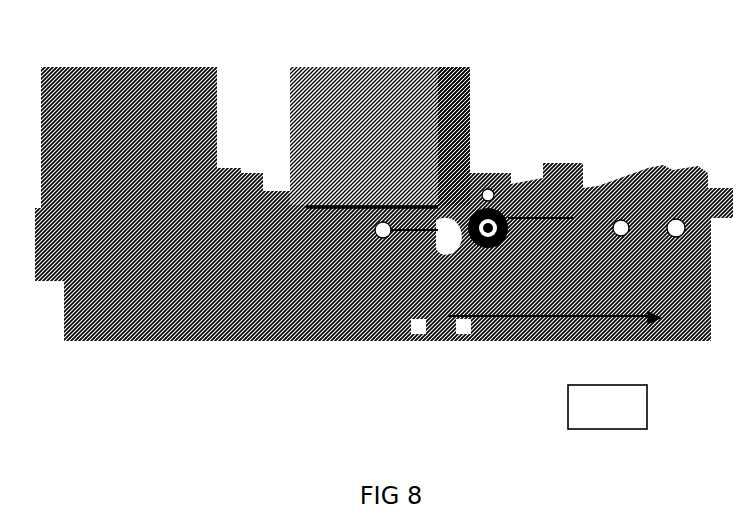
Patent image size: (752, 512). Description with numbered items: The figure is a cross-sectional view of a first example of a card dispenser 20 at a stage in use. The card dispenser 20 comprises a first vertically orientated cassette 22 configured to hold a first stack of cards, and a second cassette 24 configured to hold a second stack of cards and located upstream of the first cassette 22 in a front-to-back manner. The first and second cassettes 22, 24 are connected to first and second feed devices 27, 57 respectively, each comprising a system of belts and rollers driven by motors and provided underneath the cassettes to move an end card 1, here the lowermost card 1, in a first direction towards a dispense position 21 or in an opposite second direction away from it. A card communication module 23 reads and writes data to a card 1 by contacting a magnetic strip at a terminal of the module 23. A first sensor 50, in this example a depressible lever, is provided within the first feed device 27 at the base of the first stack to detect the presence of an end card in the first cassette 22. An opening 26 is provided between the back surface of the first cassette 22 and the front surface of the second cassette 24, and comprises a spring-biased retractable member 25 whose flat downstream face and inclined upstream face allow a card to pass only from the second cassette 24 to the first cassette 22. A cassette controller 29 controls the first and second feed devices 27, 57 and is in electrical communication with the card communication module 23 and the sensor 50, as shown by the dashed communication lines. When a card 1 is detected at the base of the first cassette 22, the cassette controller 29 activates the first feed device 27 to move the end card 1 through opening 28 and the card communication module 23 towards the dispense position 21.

The card 1 is at (355, 197).
The card dispenser 20 is at (574, 58).
The dispense position 21 is at (725, 200).
The first cassette 22 is at (352, 77).
The card communication module 23 is at (598, 377).
The second cassette 24 is at (125, 77).
The retractable member 25 is at (290, 177).
The opening 26 is at (279, 191).
The first feed device 27 is at (313, 340).
The opening 28 is at (460, 197).
The cassette controller 29 is at (183, 377).
The first sensor 50 is at (435, 248).
The second feed device 57 is at (43, 335).